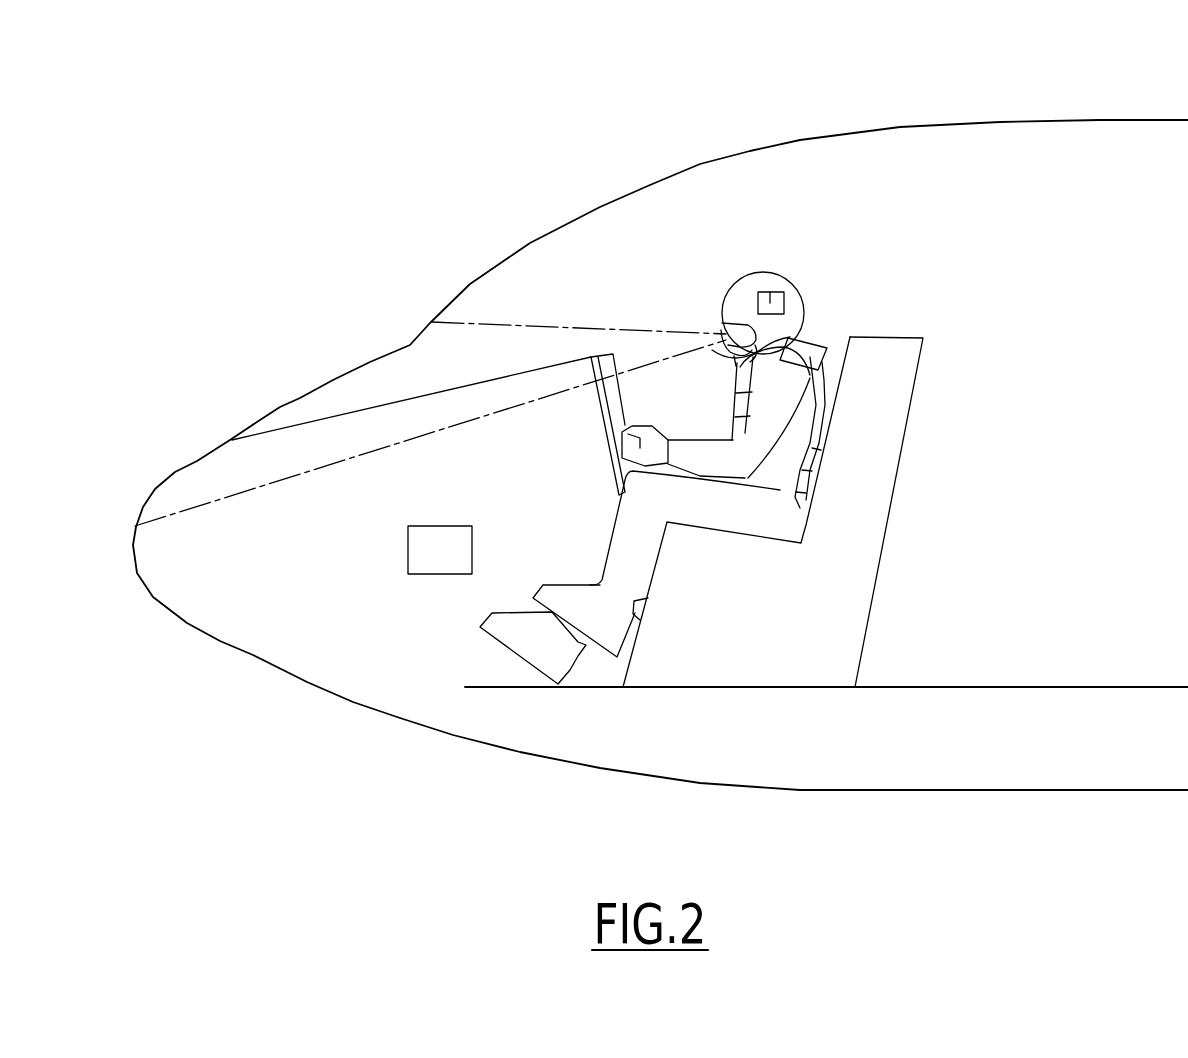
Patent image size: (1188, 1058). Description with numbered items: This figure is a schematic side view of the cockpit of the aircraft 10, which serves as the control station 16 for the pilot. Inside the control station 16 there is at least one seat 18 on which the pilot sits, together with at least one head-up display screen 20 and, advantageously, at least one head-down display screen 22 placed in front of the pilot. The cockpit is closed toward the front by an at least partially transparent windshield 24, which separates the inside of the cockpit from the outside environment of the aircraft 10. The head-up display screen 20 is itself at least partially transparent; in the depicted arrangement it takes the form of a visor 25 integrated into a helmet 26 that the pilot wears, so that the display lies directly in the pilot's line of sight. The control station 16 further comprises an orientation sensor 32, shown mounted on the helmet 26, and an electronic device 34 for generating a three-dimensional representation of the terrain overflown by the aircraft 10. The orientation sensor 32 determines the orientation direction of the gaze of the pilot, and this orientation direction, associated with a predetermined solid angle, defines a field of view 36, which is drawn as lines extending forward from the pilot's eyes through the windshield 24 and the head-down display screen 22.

The aircraft 10 is at (1085, 119).
The control station 16 is at (718, 214).
The seat 18 is at (835, 593).
The head-up display screen 20 is at (721, 327).
The head-down display screen 22 is at (610, 410).
The windshield 24 is at (337, 378).
The visor 25 is at (720, 343).
The helmet 26 is at (808, 306).
The orientation sensor 32 is at (772, 292).
The electronic device 34 is at (450, 562).
The field of view 36 is at (536, 323).